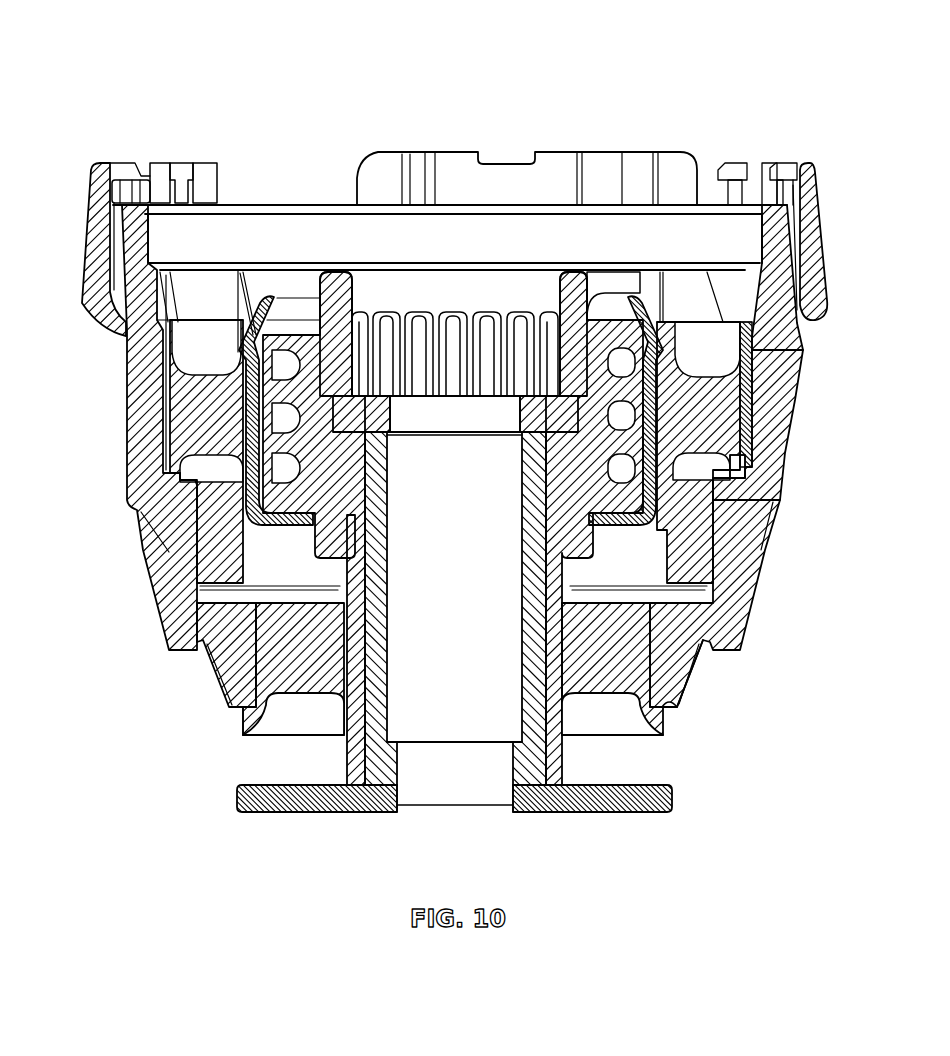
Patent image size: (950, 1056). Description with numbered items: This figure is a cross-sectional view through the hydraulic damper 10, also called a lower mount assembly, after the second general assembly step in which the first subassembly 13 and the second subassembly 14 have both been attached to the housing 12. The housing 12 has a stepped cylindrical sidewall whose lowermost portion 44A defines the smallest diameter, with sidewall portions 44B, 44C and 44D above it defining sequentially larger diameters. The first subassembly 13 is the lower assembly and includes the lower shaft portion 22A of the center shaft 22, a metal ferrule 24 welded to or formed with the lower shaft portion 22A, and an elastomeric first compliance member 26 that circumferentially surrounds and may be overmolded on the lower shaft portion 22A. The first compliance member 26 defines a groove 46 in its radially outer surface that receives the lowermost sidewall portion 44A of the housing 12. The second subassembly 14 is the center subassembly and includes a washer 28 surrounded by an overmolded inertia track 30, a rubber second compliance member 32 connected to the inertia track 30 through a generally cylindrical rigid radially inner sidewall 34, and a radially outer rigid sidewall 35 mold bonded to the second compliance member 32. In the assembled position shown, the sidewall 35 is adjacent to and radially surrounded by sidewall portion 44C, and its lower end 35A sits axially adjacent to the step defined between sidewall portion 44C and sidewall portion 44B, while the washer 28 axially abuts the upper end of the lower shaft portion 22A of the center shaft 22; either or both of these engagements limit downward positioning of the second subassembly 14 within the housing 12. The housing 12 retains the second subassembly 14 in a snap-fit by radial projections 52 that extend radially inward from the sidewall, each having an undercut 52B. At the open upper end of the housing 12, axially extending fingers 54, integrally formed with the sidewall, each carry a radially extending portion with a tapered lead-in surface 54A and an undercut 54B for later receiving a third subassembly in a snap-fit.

The hydraulic damper 10 is at (475, 458).
The housing 12 is at (172, 660).
The first subassembly 13 is at (673, 735).
The second subassembly 14 is at (238, 516).
The center shaft 22 is at (392, 680).
The lower shaft portion 22A is at (380, 720).
The ferrule 24 is at (583, 805).
The first compliance member 26 is at (250, 735).
The washer 28 is at (387, 416).
The inertia track 30 is at (340, 330).
The second compliance member 32 is at (585, 330).
The radially inner sidewall 34 is at (655, 407).
The radially outer rigid sidewall 35 is at (748, 392).
The lower end of the sidewall 35A is at (745, 468).
The lowermost sidewall portion 44A is at (680, 677).
The sidewall portion 44B is at (740, 570).
The sidewall portion 44C is at (772, 425).
The sidewall portion 44D is at (777, 250).
The groove 46 is at (678, 713).
The radial projection 52 is at (745, 298).
The undercut 52B is at (160, 333).
The axially extending finger 54 is at (167, 158).
The tapered lead-in surface 54A is at (190, 165).
The undercut 54B is at (167, 190).